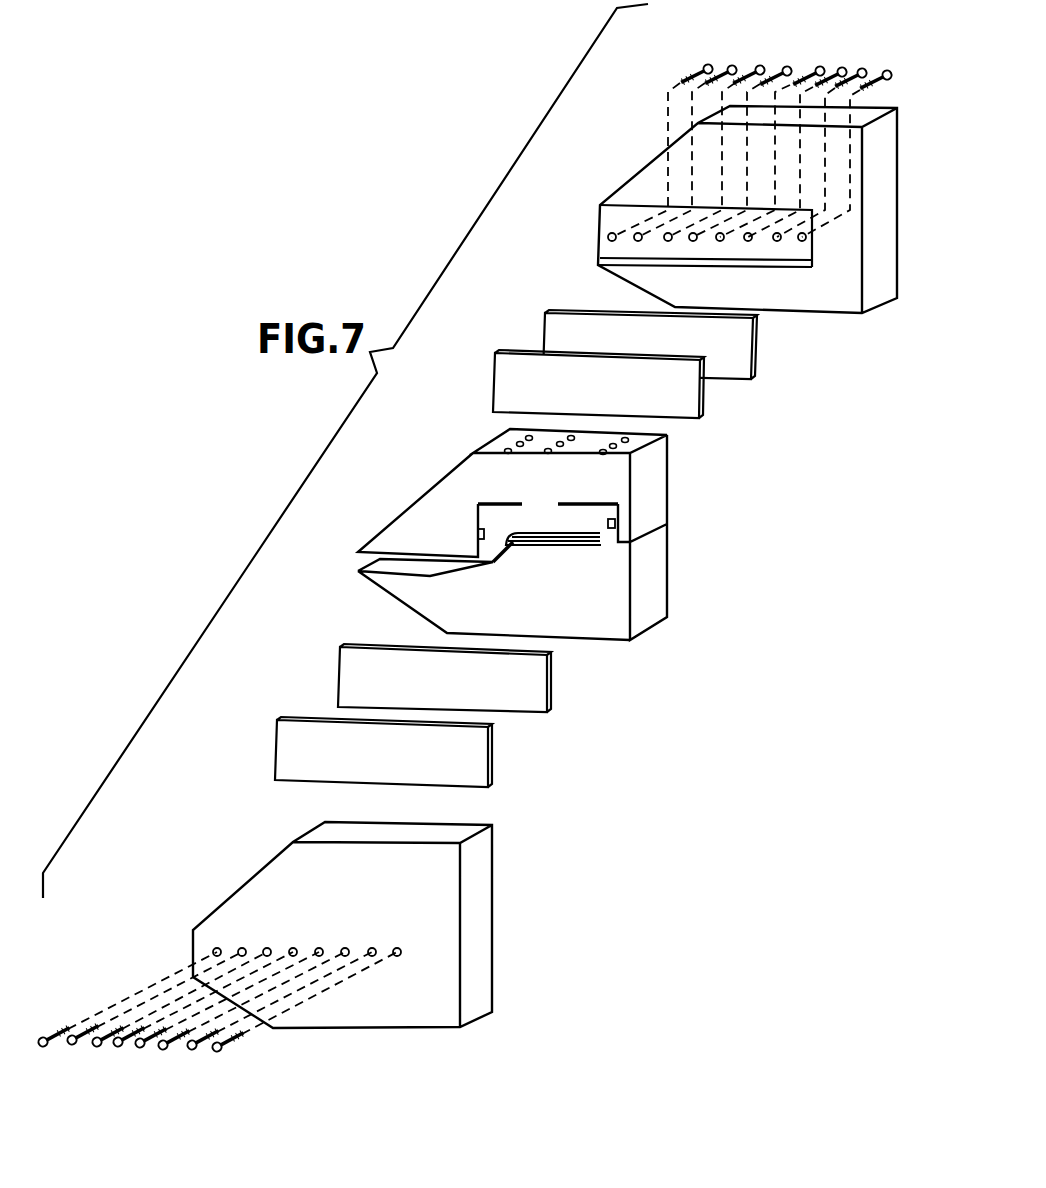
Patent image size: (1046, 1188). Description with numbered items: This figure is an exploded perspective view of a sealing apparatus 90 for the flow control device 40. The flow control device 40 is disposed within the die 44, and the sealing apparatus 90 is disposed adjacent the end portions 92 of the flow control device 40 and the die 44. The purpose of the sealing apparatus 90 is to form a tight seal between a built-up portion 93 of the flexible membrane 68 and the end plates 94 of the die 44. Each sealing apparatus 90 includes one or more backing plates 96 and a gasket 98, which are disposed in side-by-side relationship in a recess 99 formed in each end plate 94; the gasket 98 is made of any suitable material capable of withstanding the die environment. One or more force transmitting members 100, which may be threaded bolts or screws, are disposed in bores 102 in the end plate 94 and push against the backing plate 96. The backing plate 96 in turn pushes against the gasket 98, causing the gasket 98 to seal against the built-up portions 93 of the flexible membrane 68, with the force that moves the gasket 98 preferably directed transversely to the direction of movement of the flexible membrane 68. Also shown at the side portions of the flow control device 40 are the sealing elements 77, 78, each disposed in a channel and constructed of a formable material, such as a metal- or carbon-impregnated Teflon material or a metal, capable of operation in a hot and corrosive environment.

The flow control device 40 is at (553, 525).
The die 44 is at (503, 493).
The flexible membrane 68 is at (518, 548).
The sealing element 77 is at (478, 534).
The sealing element 78 is at (615, 524).
The sealing apparatus 90 is at (731, 413).
The end portions 92 is at (593, 543).
The built-up portion 93 is at (560, 545).
The end plates 94 is at (850, 288).
The backing plates 96 is at (743, 353).
The gasket 98 is at (689, 400).
The recess 99 is at (616, 215).
The force transmitting members 100 is at (886, 72).
The bores 102 is at (801, 241).